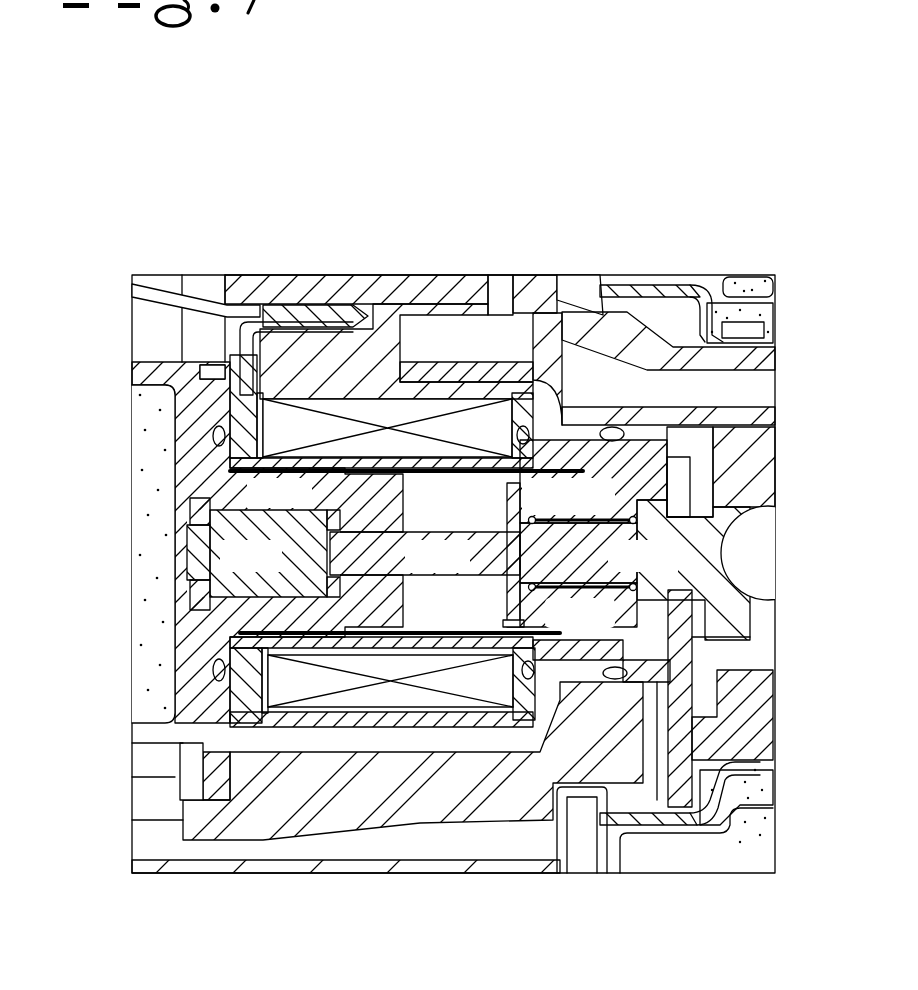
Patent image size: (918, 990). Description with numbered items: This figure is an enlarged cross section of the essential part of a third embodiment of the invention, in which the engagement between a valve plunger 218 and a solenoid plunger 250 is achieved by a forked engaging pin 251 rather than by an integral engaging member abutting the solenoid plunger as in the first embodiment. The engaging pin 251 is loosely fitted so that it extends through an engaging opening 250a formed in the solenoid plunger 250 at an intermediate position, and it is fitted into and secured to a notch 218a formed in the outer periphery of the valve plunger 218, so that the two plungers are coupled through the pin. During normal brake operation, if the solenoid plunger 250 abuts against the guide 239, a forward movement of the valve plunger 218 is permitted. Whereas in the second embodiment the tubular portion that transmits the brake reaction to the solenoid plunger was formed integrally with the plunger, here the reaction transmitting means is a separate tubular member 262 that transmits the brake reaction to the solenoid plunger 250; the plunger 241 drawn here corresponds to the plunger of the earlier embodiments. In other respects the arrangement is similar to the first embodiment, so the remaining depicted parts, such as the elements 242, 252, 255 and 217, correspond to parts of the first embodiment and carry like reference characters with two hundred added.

The guide 239 is at (392, 488).
The second coil 255 is at (384, 690).
The tubular member 262 is at (348, 508).
The rotor yoke 241 is at (263, 554).
The magnet 242 is at (157, 570).
The engaging opening 250a is at (500, 497).
The solenoid plunger 250 is at (593, 481).
The notch 218a is at (425, 553).
The holder 252 is at (590, 568).
The engaging pin 251 is at (578, 607).
The valve plunger 218 is at (740, 495).
The ball 217 is at (753, 553).